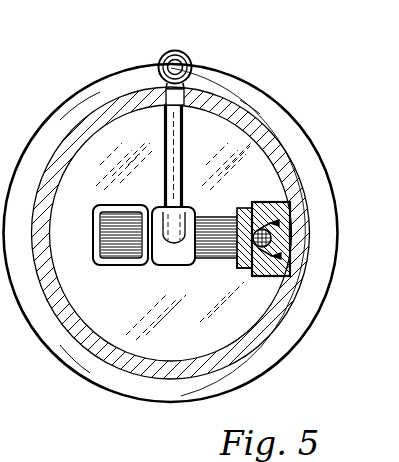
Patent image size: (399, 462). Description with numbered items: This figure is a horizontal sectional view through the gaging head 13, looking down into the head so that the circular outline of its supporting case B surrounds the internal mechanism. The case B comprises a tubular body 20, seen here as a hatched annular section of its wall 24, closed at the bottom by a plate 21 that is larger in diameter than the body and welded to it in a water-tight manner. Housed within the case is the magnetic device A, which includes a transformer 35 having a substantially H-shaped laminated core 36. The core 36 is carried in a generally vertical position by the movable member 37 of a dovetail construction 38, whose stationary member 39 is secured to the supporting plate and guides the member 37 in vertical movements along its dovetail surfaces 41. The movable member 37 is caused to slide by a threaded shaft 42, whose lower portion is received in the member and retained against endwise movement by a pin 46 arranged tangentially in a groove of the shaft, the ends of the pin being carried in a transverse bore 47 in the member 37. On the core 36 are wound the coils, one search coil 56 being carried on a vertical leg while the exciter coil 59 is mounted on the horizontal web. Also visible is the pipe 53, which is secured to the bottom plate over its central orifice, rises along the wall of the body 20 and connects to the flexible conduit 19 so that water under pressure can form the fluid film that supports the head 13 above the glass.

The gaging head 13 is at (82, 83).
The flexible conduit 19 is at (190, 65).
The tubular body 20 is at (128, 103).
The plate 21 is at (78, 109).
The wall 24 is at (75, 325).
The transformer 35 is at (96, 219).
The laminated core 36 is at (123, 238).
The movable member 37 is at (268, 191).
The dovetail construction 38 is at (279, 223).
The stationary member 39 is at (291, 232).
The dovetail surfaces 41 is at (290, 205).
The threaded shaft 42 is at (253, 274).
The pin 46 is at (303, 240).
The transverse bore 47 is at (329, 222).
The pipe 53 is at (173, 148).
The coil 56 is at (97, 258).
The coil 59 is at (178, 255).
The magnetic device A is at (97, 243).
The supporting case B is at (249, 108).